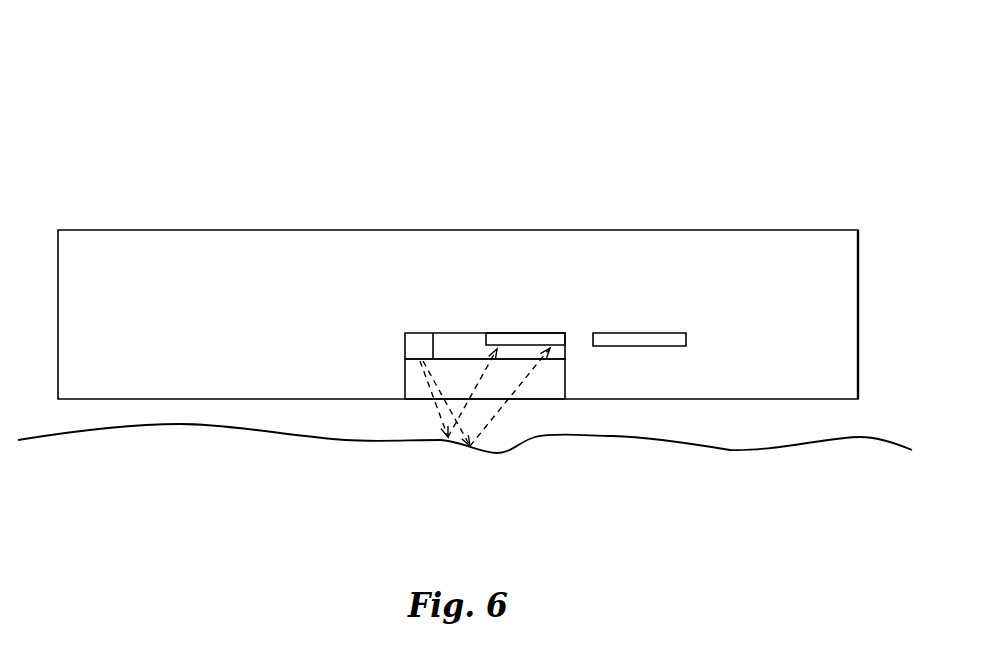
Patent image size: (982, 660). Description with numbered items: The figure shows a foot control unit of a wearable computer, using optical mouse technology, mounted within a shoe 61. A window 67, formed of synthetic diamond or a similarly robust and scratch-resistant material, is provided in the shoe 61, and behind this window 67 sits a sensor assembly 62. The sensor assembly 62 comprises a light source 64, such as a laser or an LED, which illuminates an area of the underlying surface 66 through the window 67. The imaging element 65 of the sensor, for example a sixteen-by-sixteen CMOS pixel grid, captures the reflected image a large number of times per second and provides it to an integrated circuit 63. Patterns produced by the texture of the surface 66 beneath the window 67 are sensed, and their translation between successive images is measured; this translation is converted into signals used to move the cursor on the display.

The shoe 61 is at (134, 239).
The sensor assembly 62 is at (446, 280).
The integrated circuit 63 is at (658, 322).
The light source 64 is at (419, 317).
The imaging element 65 is at (510, 315).
The underlying surface 66 is at (732, 464).
The window 67 is at (387, 378).